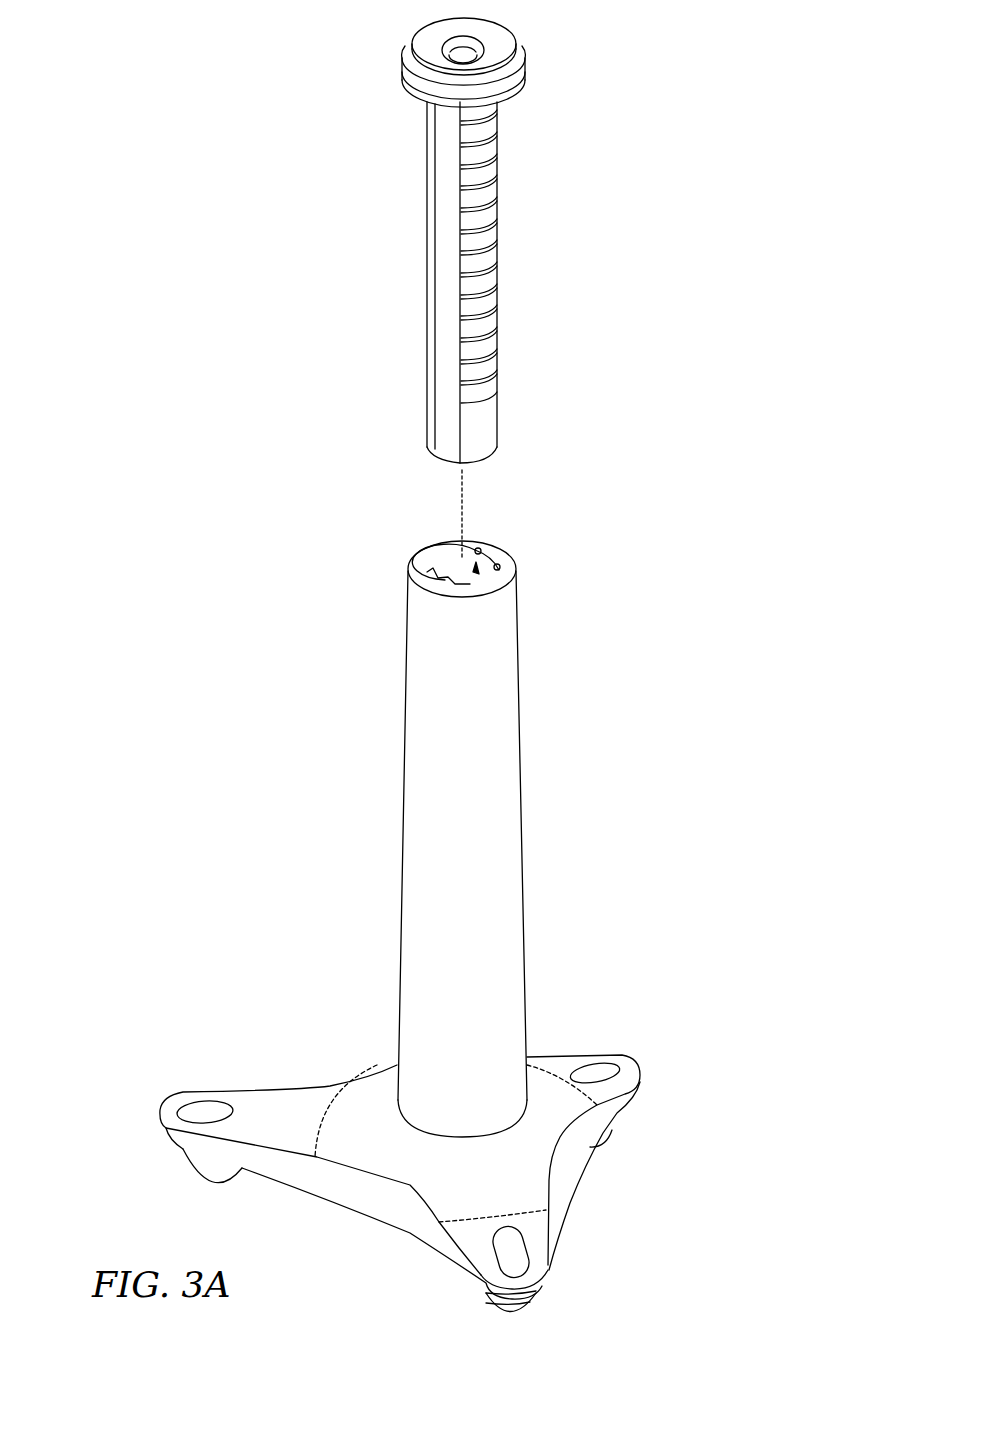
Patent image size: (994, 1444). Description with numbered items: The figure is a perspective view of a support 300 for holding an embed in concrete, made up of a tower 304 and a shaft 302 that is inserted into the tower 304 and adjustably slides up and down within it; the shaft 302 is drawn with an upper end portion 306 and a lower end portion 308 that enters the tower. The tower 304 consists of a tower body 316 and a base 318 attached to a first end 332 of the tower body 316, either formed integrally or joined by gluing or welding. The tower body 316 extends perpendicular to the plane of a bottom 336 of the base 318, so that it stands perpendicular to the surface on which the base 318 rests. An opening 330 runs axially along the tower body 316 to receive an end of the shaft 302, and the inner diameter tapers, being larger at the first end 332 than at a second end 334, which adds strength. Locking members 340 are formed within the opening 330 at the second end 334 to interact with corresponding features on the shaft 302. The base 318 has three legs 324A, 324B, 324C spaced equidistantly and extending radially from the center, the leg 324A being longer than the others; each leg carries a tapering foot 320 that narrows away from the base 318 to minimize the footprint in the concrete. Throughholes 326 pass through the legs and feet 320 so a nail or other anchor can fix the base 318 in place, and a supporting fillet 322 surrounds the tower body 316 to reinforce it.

The support 300 is at (773, 298).
The shaft 302 is at (368, 268).
The tower 304 is at (604, 674).
The pin head 306 is at (412, 86).
The pin shaft 308 is at (490, 420).
The tower body 316 is at (401, 815).
The base 318 is at (363, 1187).
The foot 320 is at (217, 1183).
The supporting fillet 322 is at (375, 1083).
The leg 324A is at (268, 1113).
The leg 324B is at (565, 1068).
The leg 324C is at (540, 1212).
The throughhole 326 is at (190, 1116).
The opening 330 is at (486, 562).
The first end 332 is at (552, 1027).
The second end 334 is at (546, 554).
The bottom 336 is at (365, 1215).
The locking member 340 is at (437, 572).